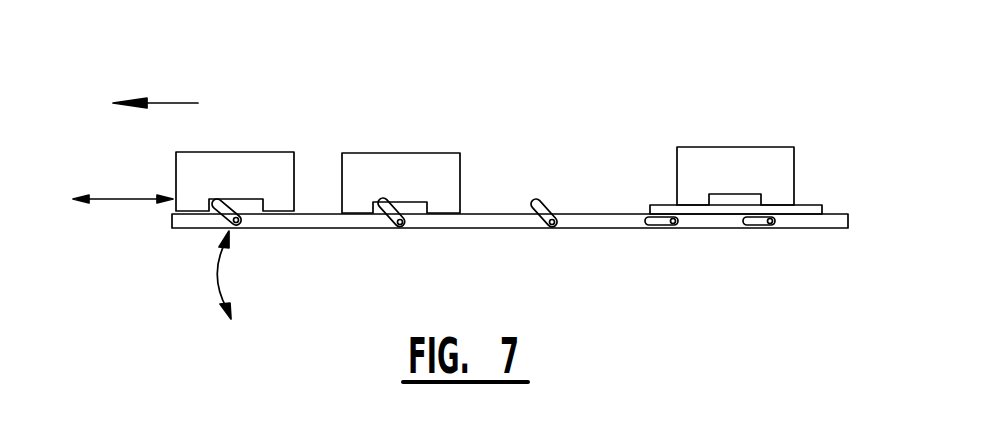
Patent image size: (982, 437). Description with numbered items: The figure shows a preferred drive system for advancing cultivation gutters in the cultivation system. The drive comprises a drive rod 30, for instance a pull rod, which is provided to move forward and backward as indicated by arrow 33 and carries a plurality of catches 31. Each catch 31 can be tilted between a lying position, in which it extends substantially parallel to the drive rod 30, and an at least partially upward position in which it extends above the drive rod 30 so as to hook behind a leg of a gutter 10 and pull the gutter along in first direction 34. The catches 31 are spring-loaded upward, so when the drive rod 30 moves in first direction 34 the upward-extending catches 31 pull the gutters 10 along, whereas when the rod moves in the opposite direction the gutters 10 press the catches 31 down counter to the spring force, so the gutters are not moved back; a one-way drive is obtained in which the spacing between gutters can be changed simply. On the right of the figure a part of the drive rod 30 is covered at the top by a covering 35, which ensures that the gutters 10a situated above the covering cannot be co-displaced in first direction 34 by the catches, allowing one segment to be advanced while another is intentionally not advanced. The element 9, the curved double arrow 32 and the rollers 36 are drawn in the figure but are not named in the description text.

The holding pin 9 is at (210, 228).
The gutter 10 is at (280, 160).
The gutter 10a is at (712, 155).
The drive rod 30 is at (590, 222).
The catch 31 is at (392, 217).
The pivoting direction 32 is at (213, 277).
The arrow 33 is at (125, 199).
The first direction 34 is at (172, 103).
The covering 35 is at (805, 205).
The roller 36 is at (657, 223).